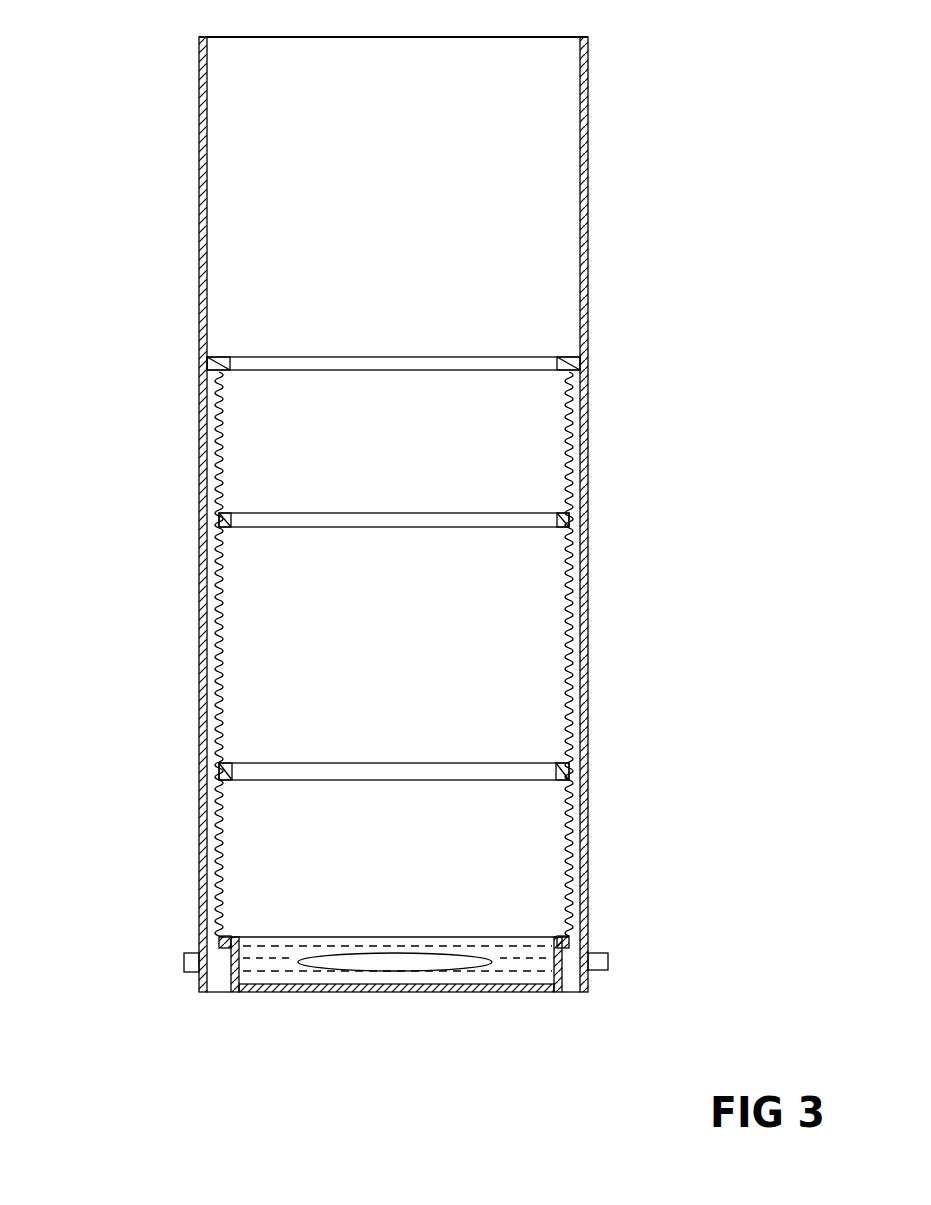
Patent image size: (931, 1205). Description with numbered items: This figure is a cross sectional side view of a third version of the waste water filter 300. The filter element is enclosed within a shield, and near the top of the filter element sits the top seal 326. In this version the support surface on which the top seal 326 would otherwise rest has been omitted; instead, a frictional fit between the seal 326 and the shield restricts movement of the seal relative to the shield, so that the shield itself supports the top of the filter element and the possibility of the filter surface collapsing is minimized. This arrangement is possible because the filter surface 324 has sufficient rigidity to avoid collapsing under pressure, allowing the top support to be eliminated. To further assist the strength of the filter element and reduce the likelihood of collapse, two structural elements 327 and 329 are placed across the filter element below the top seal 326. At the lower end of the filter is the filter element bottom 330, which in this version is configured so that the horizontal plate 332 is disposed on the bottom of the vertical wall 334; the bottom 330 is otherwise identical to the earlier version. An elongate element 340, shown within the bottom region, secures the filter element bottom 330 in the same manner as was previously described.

The waste water filter 300 is at (162, 369).
The filter surface 324 is at (522, 644).
The top seal 326 is at (575, 362).
The structural element 327 is at (563, 520).
The structural element 329 is at (572, 772).
The filter element bottom 330 is at (237, 988).
The horizontal plate 332 is at (378, 990).
The vertical wall 334 is at (232, 968).
The elongate element 340 is at (427, 962).